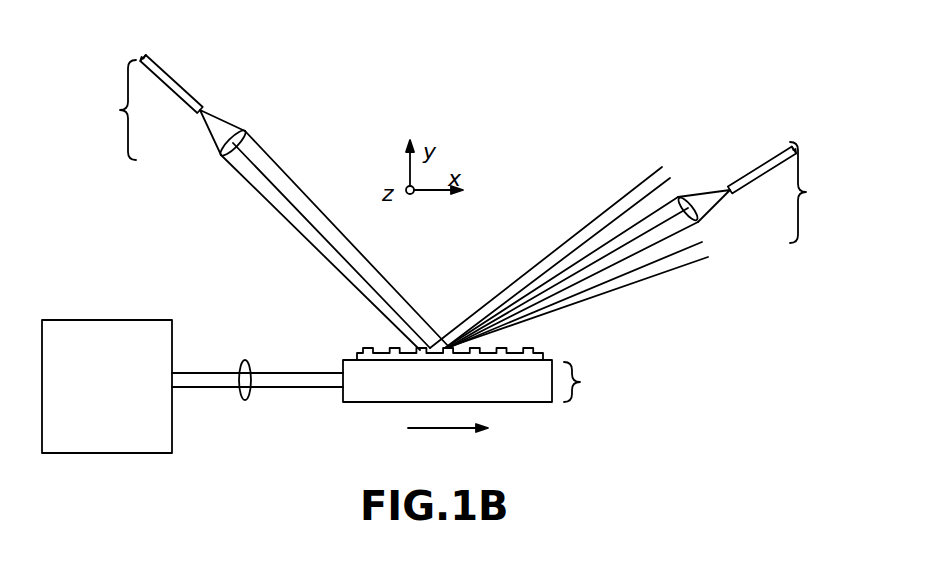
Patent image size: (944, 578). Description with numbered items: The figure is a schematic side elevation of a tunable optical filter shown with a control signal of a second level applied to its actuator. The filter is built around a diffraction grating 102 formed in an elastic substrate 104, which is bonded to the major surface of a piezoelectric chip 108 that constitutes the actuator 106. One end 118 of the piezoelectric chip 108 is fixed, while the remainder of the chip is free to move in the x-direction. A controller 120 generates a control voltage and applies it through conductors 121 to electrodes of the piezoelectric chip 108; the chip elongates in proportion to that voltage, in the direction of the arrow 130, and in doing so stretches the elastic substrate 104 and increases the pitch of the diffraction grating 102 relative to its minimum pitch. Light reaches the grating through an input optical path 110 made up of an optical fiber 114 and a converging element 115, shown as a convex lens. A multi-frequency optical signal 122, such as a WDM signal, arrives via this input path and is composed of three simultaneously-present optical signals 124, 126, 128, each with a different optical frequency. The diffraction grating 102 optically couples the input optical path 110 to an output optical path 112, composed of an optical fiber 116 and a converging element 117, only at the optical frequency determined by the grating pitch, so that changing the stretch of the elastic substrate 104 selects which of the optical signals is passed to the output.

The diffraction grating 102 is at (380, 346).
The elastic substrate 104 is at (355, 353).
The actuator 106 is at (582, 382).
The piezoelectric chip 108 is at (545, 370).
The input optical path 110 is at (119, 110).
The output optical path 112 is at (806, 192).
The optical fiber 114 is at (178, 80).
The converging element 115 is at (243, 130).
The optical fiber 116 is at (752, 168).
The converging element 117 is at (683, 196).
The end 118 is at (343, 395).
The controller 120 is at (124, 402).
The conductors 121 is at (246, 402).
The multi-frequency optical signal 122 is at (333, 245).
The optical signal 124 is at (655, 189).
The optical signal 126 is at (647, 230).
The optical signal 128 is at (698, 246).
The arrow 130 is at (420, 430).